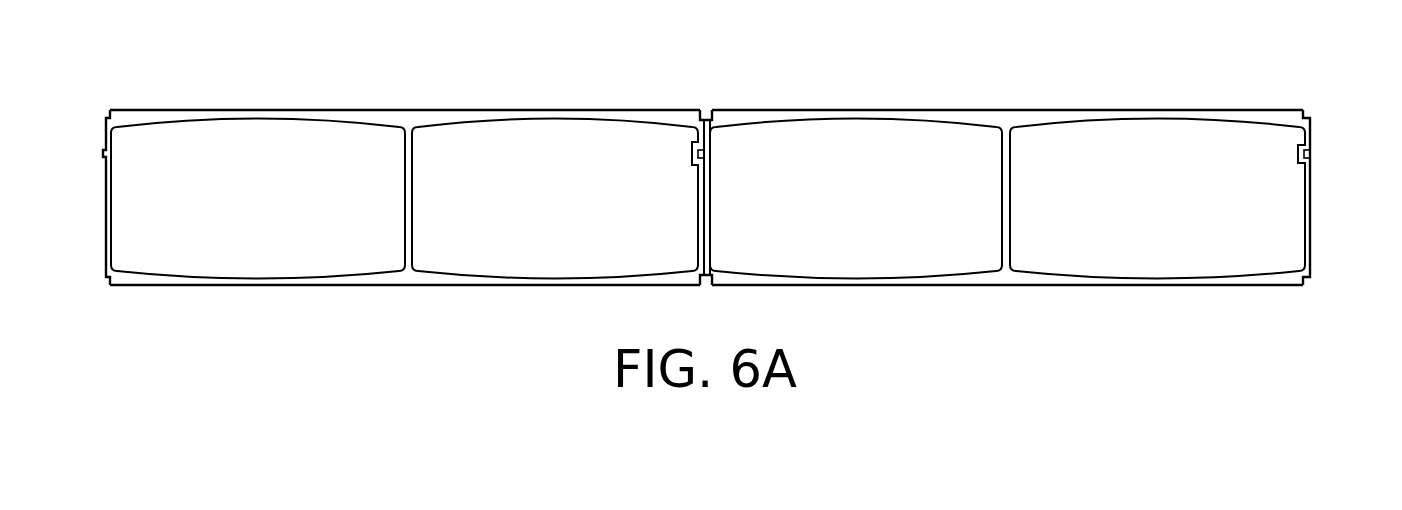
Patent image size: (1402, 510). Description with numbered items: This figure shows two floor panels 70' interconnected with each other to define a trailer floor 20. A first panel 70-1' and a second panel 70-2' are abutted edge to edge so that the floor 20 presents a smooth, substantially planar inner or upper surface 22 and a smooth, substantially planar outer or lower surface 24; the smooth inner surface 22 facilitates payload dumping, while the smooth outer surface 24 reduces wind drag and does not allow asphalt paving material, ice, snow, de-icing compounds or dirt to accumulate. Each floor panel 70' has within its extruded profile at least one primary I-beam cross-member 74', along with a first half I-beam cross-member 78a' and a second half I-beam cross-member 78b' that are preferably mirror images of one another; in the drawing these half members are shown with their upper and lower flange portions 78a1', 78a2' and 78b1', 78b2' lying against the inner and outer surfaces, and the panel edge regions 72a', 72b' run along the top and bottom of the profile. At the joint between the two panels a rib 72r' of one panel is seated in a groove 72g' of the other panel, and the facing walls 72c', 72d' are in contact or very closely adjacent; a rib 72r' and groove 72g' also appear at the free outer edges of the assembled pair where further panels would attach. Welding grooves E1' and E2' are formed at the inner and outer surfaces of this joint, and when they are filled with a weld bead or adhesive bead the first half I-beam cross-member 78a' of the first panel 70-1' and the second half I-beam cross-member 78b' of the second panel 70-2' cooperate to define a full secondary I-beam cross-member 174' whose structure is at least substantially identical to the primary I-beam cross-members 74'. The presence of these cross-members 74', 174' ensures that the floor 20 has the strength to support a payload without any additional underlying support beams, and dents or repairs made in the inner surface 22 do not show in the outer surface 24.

The floor 20 is at (1269, 104).
The inner surface 22 is at (936, 105).
The outer surface 24 is at (474, 290).
The floor panel 70' is at (1166, 75).
The first panel 70-1' is at (1157, 230).
The second panel 70-2' is at (258, 230).
The top edge of panel 72a' is at (328, 83).
The bottom edge of panel 72b' is at (1007, 313).
The wall 72c' is at (756, 237).
The wall 72d' is at (643, 197).
The groove 72g' is at (999, 179).
The rib 72r' is at (414, 141).
The primary I-beam cross-member 74' is at (707, 90).
The first half I-beam cross-member 78a' is at (791, 83).
The upper portion of first flange 78a1' is at (856, 160).
The lower portion of first flange 78a2' is at (856, 270).
The second half I-beam cross-member 78b' is at (545, 83).
The upper portion of second flange 78b1' is at (555, 160).
The lower portion of second flange 78b2' is at (555, 270).
The secondary I-beam cross-member 174' is at (656, 72).
The welding groove E1' is at (730, 87).
The welding groove E2' is at (695, 308).